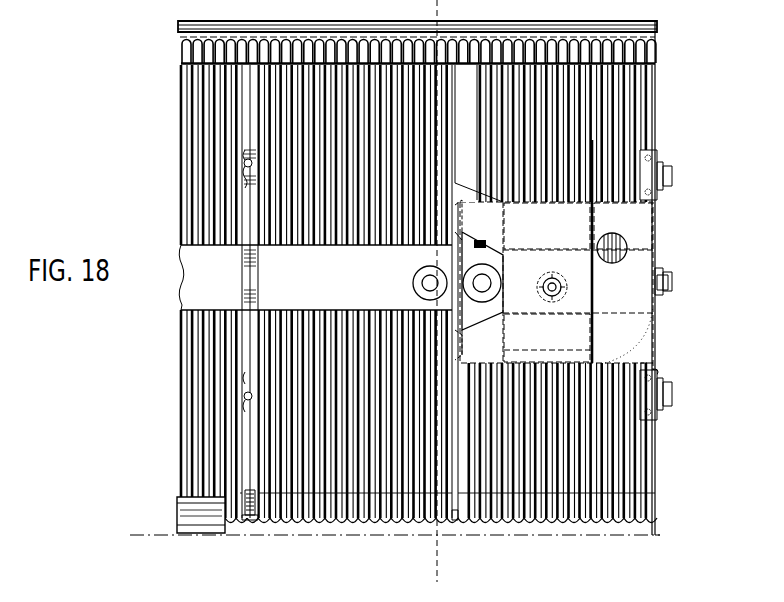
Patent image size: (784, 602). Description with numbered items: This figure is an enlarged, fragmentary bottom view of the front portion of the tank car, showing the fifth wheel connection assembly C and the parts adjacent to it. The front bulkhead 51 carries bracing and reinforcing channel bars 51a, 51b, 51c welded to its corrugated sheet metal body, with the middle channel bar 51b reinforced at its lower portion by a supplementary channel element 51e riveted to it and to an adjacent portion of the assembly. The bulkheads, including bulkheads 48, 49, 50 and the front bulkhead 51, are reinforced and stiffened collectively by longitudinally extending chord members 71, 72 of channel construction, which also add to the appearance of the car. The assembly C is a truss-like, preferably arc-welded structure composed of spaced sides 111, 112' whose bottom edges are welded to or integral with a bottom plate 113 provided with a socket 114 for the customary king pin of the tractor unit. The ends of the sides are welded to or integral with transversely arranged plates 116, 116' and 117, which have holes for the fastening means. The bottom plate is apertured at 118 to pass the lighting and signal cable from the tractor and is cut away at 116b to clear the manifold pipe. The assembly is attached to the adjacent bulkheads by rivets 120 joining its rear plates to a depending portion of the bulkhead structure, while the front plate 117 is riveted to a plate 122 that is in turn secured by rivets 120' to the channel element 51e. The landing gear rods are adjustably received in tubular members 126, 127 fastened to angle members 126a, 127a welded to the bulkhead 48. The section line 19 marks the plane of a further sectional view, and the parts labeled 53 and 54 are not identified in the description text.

The chord member 71 is at (178, 34).
The section line 19 is at (432, 11).
The bearing support band 53 is at (342, 281).
The fifth wheel connection assembly C is at (646, 265).
The transversely arranged plate 116 is at (479, 216).
The side 112' is at (547, 226).
The cut-away 116b is at (462, 240).
The socket 114 is at (548, 298).
The front plate 117 is at (650, 219).
The aperture 118 is at (618, 258).
The channel bar 51a is at (672, 182).
The middle channel bar 51b is at (672, 280).
The supplementary channel element 51e is at (668, 292).
The rivets 120 is at (481, 345).
The transversely arranged plate 116' is at (501, 338).
The bottom plate 113 is at (565, 338).
The side 111 is at (547, 353).
The rivets 120' is at (674, 359).
The channel bar 51c is at (672, 397).
The louver fins 54 is at (623, 452).
The front bulkhead 51 is at (664, 490).
The plate 122 is at (656, 528).
The tubular member 126 is at (244, 164).
The angle member 126a is at (247, 184).
The angle member 127a is at (245, 380).
The tubular member 127 is at (244, 397).
The chord member 72 is at (177, 530).
The bulkhead 48 is at (249, 516).
The bulkhead 49 is at (255, 520).
The bulkhead 50 is at (456, 520).